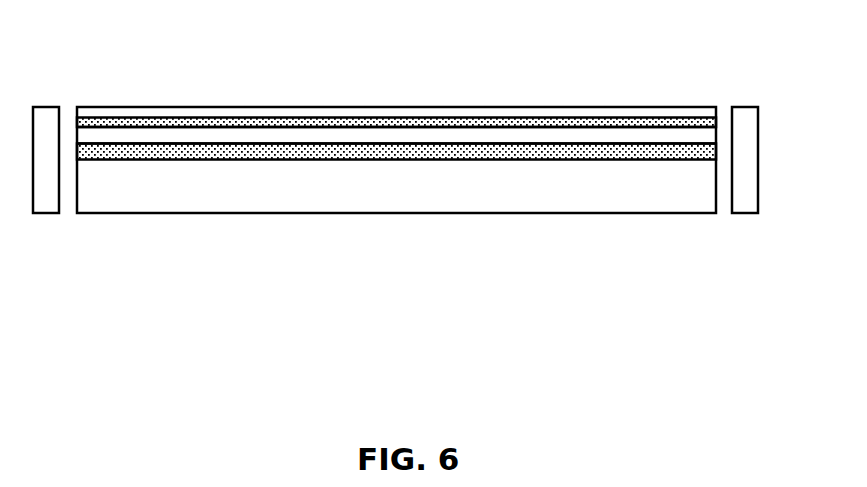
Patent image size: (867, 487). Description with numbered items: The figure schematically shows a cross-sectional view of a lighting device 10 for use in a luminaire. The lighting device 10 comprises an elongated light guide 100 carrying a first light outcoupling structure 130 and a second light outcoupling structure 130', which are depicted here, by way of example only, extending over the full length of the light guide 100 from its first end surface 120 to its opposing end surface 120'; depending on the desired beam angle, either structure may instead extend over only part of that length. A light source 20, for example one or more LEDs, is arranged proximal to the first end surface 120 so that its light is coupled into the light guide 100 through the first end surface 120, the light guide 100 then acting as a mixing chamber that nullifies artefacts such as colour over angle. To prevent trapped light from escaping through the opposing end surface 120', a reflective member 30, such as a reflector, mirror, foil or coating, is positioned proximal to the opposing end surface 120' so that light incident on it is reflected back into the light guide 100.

The lighting device 10 is at (412, 217).
The light guide 100 is at (414, 213).
The first end surface 120 is at (374, 92).
The opposing end surface 120' is at (434, 99).
The first light outcoupling structure 130 is at (396, 101).
The second light outcoupling structure 130' is at (396, 71).
The light source 20 is at (48, 215).
The reflective member 30 is at (743, 215).